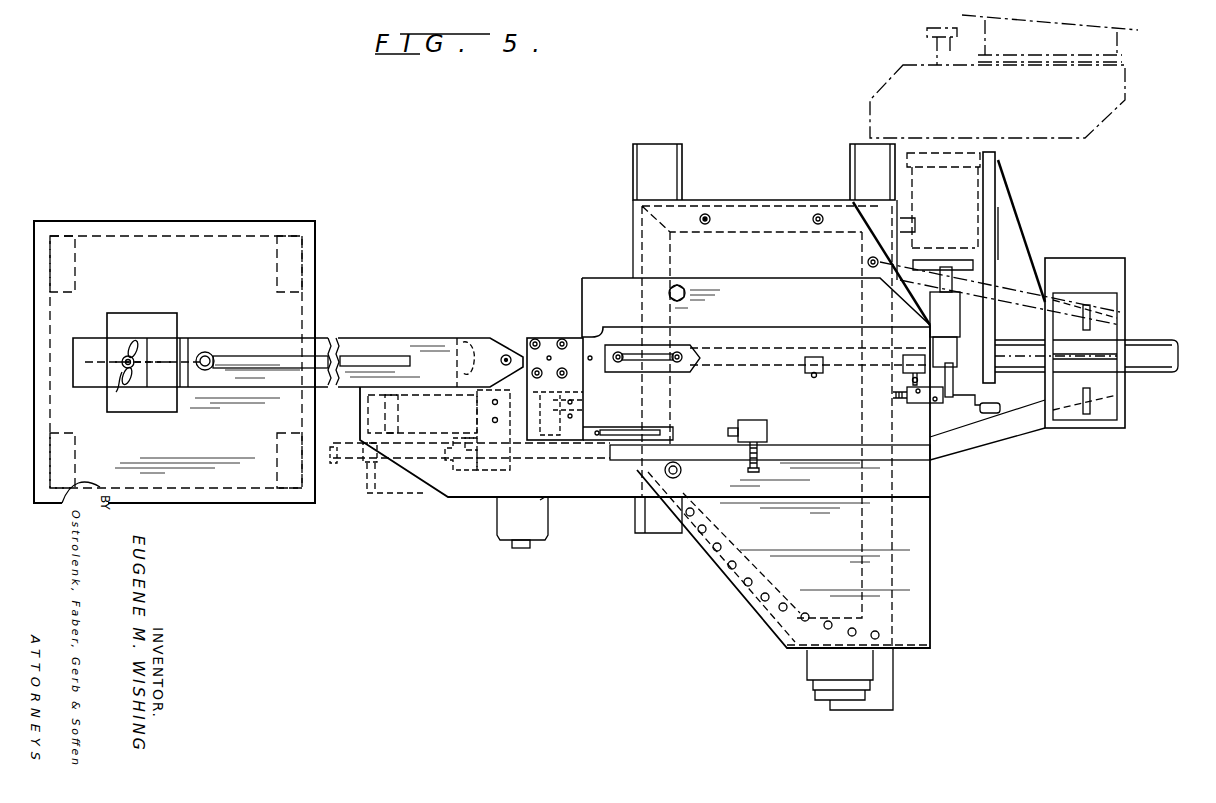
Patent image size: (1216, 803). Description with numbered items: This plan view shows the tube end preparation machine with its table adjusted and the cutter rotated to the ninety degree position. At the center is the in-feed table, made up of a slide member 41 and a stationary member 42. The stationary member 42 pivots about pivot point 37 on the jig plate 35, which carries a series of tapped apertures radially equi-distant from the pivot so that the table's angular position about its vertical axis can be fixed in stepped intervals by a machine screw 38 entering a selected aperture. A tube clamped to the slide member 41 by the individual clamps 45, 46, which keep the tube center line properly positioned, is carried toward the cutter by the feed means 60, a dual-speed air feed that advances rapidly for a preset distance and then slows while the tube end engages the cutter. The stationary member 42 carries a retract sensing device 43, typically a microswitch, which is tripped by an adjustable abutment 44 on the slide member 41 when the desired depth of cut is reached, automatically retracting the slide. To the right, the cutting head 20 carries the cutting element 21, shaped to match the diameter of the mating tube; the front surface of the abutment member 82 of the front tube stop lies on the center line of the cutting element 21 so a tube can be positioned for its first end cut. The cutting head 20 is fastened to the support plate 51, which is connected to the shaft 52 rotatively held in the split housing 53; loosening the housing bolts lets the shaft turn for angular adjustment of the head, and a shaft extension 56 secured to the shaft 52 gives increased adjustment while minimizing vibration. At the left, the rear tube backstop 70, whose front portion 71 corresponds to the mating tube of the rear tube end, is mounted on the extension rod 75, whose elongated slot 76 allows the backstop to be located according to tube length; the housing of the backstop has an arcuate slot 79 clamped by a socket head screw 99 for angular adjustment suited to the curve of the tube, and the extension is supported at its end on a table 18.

The housing 18 is at (225, 279).
The cutting head 20 is at (965, 202).
The cutting element 21 is at (950, 349).
The jig plate 35 is at (742, 595).
The pivot point 37 is at (885, 387).
The machine screw 38 is at (683, 472).
The slide member 41 is at (552, 340).
The stationary member 42 is at (600, 285).
The retract sensing device 43 is at (768, 430).
The adjustable abutment 44 is at (662, 428).
The clamp 45 is at (812, 376).
The clamp 46 is at (900, 358).
The support plate 51 is at (990, 230).
The shaft 52 is at (1025, 374).
The split housing 53 is at (1128, 314).
The shaft extension 56 is at (1158, 375).
The feed means 60 is at (478, 502).
The rear tube backstop 70 is at (164, 417).
The front portion 71 is at (208, 352).
The extension rod 75 is at (325, 340).
The elongated slot 76 is at (358, 360).
The arcuate slot 79 is at (131, 354).
The abutment member 82 is at (952, 390).
The socket head screw 99 is at (124, 384).